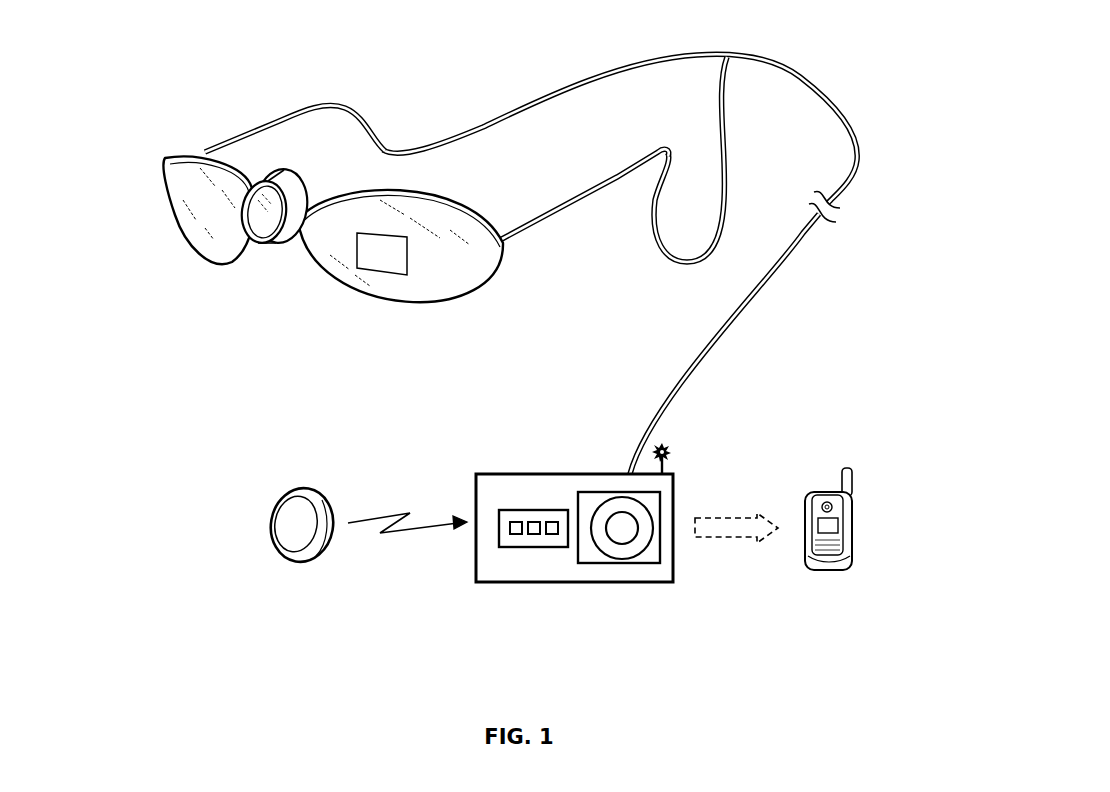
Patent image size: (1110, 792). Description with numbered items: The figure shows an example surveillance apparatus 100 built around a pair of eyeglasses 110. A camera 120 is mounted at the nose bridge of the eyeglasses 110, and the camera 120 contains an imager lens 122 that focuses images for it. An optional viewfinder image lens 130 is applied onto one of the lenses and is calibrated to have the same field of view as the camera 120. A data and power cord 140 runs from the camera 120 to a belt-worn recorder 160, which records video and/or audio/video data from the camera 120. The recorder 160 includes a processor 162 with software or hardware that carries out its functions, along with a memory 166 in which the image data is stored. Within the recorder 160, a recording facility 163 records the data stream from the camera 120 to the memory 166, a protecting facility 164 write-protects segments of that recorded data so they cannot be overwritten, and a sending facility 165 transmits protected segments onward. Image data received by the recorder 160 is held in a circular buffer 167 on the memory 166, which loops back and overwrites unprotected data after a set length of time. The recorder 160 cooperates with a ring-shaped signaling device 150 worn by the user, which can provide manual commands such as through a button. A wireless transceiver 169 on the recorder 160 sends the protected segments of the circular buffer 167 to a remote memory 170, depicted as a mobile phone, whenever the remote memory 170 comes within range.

The surveillance apparatus 100 is at (866, 78).
The eyeglasses 110 is at (160, 172).
The camera 120 is at (293, 173).
The imager lens 122 is at (264, 245).
The viewfinder image lens 130 is at (360, 270).
The data and power cord 140 is at (520, 102).
The ring-shaped signaling device 150 is at (273, 525).
The recorder 160 is at (477, 532).
The processor 162 is at (500, 535).
The recording facility 163 is at (515, 533).
The protecting facility 164 is at (535, 533).
The sending facility 165 is at (553, 520).
The memory 166 is at (625, 562).
The circular buffer 167 is at (603, 503).
The wireless transceiver 169 is at (665, 460).
The remote memory 170 is at (852, 522).